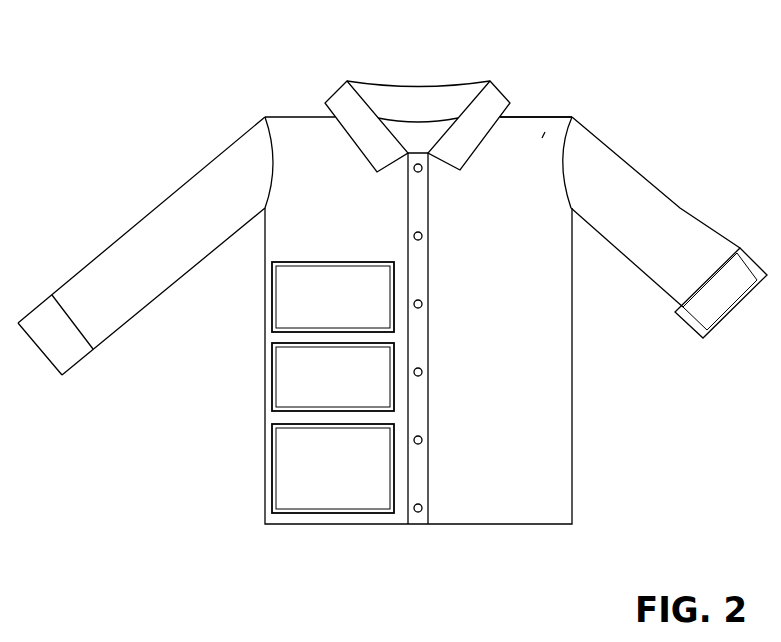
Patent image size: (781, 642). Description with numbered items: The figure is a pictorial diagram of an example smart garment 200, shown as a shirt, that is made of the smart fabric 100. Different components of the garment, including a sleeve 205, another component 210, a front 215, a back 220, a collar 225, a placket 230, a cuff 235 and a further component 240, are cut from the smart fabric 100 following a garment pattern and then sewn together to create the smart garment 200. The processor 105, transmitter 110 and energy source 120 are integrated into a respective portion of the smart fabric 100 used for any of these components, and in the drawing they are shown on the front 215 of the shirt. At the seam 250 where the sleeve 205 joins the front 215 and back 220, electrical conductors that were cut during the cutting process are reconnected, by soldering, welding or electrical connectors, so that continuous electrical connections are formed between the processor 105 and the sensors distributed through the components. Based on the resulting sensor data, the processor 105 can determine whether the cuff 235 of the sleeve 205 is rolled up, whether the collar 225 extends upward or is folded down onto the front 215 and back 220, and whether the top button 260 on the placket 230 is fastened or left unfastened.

The smart fabric 100 is at (545, 352).
The processor 105 is at (333, 297).
The transmitter 110 is at (333, 377).
The energy source 120 is at (333, 468).
The smart garment 200 is at (285, 84).
The sleeve 205 is at (663, 225).
The component of the smart garment 210 is at (188, 200).
The front 215 is at (518, 135).
The back 220 is at (549, 126).
The collar 225 is at (425, 100).
The placket 230 is at (418, 478).
The cuff 235 is at (697, 327).
The component of the smart garment 240 is at (68, 350).
The seam 250 is at (563, 160).
The top button 260 is at (422, 170).